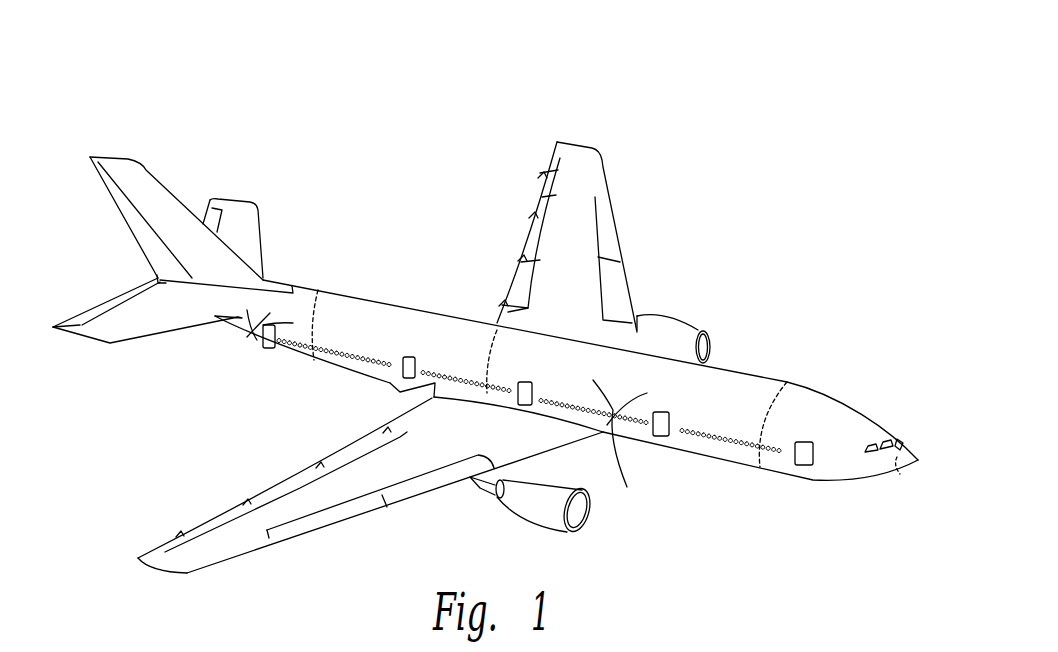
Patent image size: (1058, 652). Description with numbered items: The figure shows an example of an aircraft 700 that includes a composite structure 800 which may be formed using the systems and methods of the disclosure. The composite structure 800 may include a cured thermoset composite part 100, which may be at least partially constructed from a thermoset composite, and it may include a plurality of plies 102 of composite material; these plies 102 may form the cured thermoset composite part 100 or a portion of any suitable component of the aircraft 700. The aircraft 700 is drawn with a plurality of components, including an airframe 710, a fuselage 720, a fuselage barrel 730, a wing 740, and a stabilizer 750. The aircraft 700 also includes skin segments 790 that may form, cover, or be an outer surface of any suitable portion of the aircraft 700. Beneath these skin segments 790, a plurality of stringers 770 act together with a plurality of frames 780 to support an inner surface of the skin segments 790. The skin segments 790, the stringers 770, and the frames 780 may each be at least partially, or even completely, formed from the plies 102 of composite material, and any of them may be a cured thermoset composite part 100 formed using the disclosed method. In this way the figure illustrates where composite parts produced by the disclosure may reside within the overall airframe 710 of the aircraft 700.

The cured thermoset composite part 100 is at (598, 72).
The plies of composite material 102 is at (712, 269).
The aircraft 700 is at (846, 121).
The airframe 710 is at (813, 337).
The fuselage 720 is at (412, 300).
The fuselage barrel 730 is at (447, 325).
The wing 740 is at (567, 220).
The stabilizer 750 is at (253, 233).
The stringers 770 is at (713, 410).
The frames 780 is at (257, 340).
The skin segments 790 is at (629, 446).
The composite structure 800 is at (789, 228).